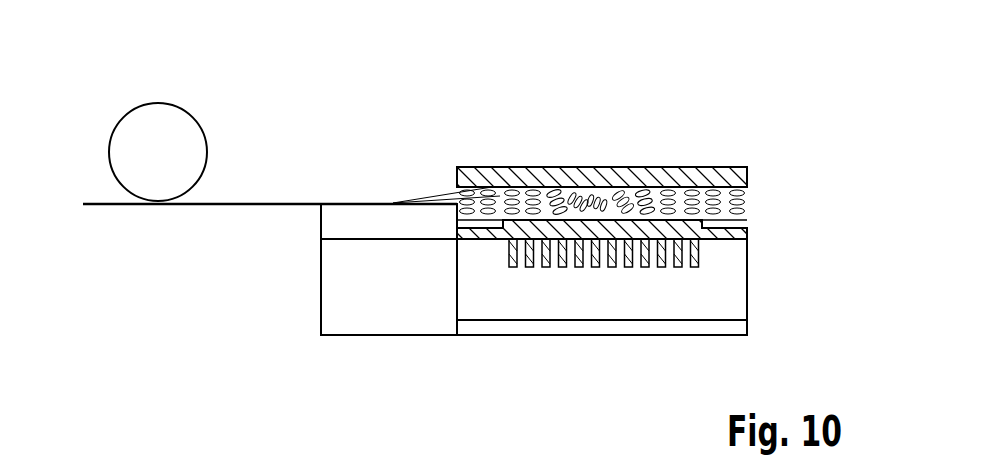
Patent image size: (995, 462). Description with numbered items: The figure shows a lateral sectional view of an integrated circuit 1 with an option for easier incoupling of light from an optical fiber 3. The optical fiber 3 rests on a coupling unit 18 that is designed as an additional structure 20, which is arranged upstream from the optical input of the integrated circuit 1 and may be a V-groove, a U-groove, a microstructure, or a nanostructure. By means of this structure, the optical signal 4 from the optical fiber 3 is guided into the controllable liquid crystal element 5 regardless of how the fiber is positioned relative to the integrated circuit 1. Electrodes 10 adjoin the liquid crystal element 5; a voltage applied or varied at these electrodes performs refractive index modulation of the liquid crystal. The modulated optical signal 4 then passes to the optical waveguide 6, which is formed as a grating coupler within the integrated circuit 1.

The integrated circuit 1 is at (653, 336).
The optical fiber 3 is at (113, 132).
The optical signal 4 is at (650, 296).
The liquid crystal element 5 is at (605, 168).
The optical waveguide 6 is at (527, 268).
The electrodes 10 is at (750, 222).
The coupling unit 18 is at (270, 236).
The additional structure 20 is at (302, 227).